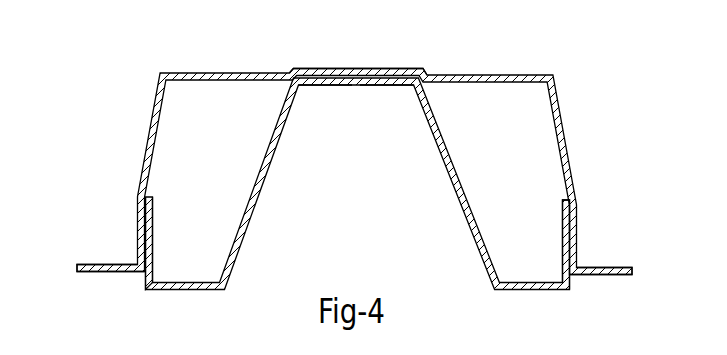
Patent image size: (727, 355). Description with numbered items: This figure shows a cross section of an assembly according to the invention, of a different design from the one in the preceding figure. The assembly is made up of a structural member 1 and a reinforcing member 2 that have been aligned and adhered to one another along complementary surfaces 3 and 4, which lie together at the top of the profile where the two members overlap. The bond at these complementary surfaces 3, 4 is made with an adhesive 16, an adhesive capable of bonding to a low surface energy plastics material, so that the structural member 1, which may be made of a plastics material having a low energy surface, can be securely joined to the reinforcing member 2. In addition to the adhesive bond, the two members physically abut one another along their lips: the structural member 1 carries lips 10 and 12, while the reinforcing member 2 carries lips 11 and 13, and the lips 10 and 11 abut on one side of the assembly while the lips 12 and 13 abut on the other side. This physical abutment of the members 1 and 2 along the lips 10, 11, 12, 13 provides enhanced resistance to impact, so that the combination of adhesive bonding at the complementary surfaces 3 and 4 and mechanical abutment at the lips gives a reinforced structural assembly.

The structural member 1 is at (463, 200).
The reinforcing member 2 is at (565, 118).
The complementary surface 3 is at (364, 84).
The complementary surface 4 is at (348, 76).
The lip 10 is at (152, 236).
The lip 11 is at (140, 232).
The lip 12 is at (562, 247).
The lip 13 is at (577, 228).
The adhesive 16 is at (390, 68).